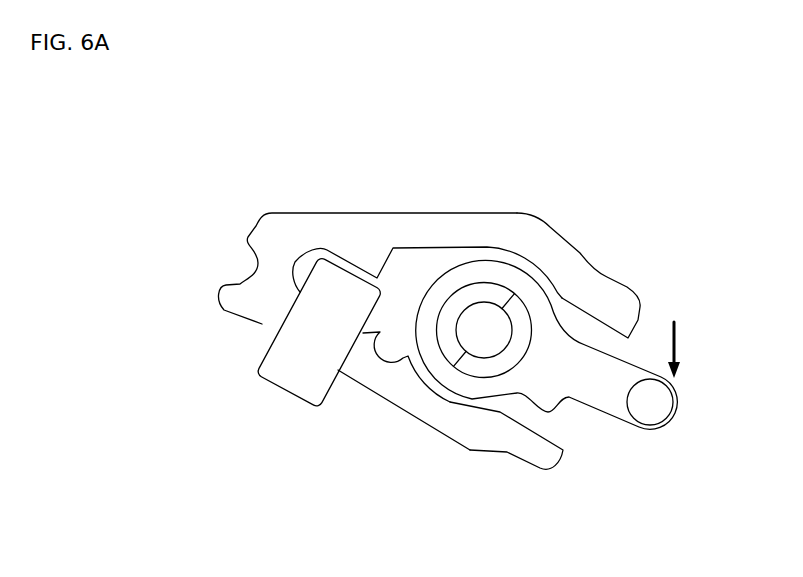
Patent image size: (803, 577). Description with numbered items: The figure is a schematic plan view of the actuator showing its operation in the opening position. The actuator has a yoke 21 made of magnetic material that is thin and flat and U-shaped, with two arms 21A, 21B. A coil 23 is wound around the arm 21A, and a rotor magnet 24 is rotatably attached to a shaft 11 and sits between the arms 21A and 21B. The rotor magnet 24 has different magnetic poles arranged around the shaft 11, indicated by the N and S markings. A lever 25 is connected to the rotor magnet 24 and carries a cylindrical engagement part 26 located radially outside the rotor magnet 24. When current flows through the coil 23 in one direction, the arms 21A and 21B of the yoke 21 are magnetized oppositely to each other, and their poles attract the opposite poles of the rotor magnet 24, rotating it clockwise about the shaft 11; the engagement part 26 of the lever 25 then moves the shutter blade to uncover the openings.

The shaft 11 is at (470, 335).
The yoke 21 is at (388, 186).
The arm 21A is at (522, 447).
The arm 21B is at (613, 297).
The coil 23 is at (293, 380).
The rotor magnet 24 is at (483, 282).
The lever 25 is at (587, 427).
The engagement part 26 is at (653, 402).